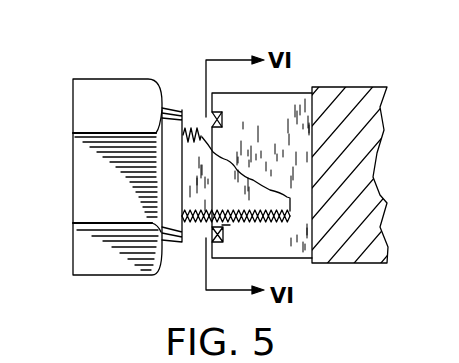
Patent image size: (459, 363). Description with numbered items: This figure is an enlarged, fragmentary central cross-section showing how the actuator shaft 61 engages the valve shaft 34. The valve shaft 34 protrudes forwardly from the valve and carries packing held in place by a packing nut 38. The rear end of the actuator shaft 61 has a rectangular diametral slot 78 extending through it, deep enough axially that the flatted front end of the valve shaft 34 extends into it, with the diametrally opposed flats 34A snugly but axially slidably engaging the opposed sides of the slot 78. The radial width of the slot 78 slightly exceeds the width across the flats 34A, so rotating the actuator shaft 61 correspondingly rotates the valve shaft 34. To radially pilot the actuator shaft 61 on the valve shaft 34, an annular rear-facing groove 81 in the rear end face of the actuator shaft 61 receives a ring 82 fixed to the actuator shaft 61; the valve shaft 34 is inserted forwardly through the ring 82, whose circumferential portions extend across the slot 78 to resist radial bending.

The packing nut 38 is at (118, 93).
The flats 34A is at (198, 178).
The valve shaft 34 is at (203, 228).
The diametral slot 78 is at (298, 100).
The actuator shaft 61 is at (366, 78).
The annular groove 81 is at (222, 238).
The ring 82 is at (217, 227).